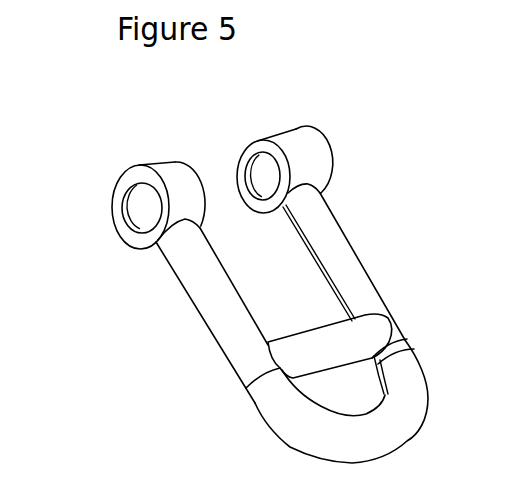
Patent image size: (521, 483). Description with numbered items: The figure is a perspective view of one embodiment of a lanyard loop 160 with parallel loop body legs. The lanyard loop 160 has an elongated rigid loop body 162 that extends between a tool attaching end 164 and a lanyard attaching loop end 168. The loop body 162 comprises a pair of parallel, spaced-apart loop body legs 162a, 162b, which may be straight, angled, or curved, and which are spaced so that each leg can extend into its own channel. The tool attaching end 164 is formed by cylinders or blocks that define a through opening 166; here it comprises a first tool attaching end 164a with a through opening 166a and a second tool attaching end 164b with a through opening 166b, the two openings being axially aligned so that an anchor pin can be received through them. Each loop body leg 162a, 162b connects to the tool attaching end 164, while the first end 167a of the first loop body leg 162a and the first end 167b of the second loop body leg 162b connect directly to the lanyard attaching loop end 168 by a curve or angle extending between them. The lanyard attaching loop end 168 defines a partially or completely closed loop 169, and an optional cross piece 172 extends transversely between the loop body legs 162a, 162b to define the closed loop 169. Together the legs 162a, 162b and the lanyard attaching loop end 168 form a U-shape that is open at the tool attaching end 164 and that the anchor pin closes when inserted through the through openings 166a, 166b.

The lanyard loop 160 is at (77, 115).
The loop body 162 is at (317, 243).
The first loop body leg 162a is at (210, 307).
The second loop body leg 162b is at (347, 250).
The tool attaching end 164 is at (278, 142).
The first tool attaching end 164a is at (152, 173).
The second tool attaching end 164b is at (287, 135).
The through opening 166 is at (268, 188).
The first through opening 166a is at (140, 212).
The second through opening 166b is at (263, 180).
The first end of first loop body leg 167a is at (248, 372).
The first end of second loop body leg 167b is at (400, 317).
The lanyard attaching loop end 168 is at (407, 405).
The closed loop 169 is at (407, 339).
The cross piece 172 is at (338, 340).